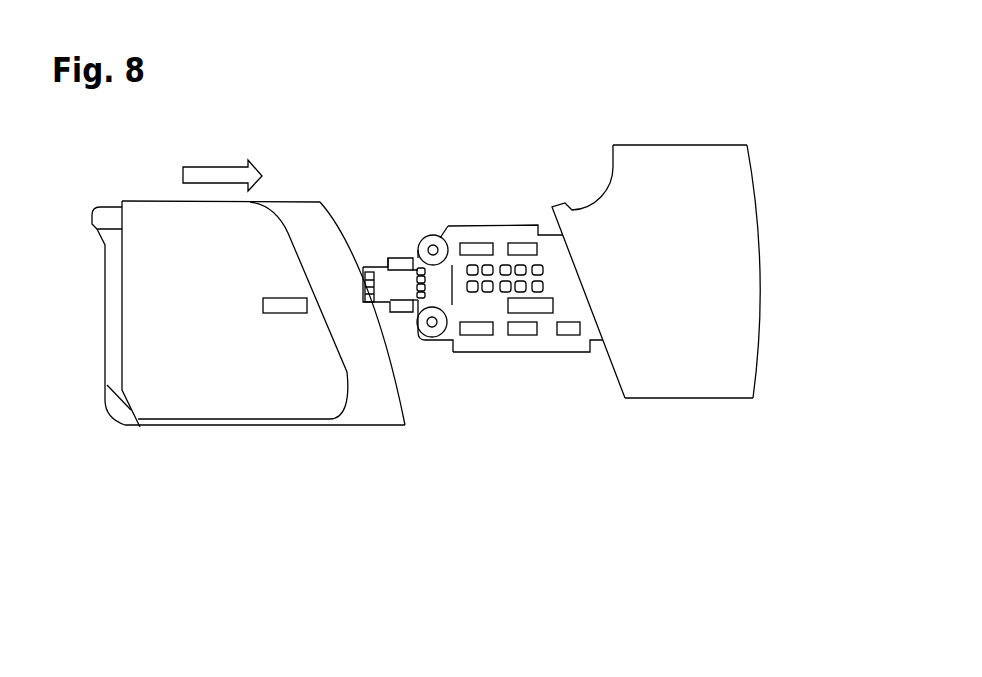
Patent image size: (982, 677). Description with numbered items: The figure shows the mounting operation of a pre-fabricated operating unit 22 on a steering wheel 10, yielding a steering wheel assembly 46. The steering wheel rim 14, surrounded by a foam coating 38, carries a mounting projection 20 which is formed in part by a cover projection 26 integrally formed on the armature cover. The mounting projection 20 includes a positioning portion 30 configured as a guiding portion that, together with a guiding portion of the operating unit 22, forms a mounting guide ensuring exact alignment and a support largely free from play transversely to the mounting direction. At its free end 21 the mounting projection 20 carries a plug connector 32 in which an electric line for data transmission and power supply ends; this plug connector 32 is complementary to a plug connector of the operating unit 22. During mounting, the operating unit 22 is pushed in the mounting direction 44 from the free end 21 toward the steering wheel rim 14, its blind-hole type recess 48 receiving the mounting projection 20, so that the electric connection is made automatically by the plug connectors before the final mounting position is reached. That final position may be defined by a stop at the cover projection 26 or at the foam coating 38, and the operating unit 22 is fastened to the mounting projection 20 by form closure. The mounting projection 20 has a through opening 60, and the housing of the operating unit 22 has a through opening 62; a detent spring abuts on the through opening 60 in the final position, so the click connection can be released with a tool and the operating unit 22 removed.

The steering wheel 10 is at (682, 128).
The steering wheel rim 14 is at (735, 357).
The mounting projection 20 is at (446, 208).
The free end 21 is at (376, 261).
The operating unit 22 is at (137, 333).
The cover projection 26 is at (447, 286).
The positioning portion 30 is at (521, 225).
The plug connector 32 is at (378, 296).
The foam coating 38 is at (735, 198).
The mounting direction 44 is at (215, 165).
The steering wheel assembly 46 is at (390, 443).
The blind-hole type recess 48 is at (342, 218).
The through opening 60 is at (545, 308).
The through opening 62 is at (287, 298).